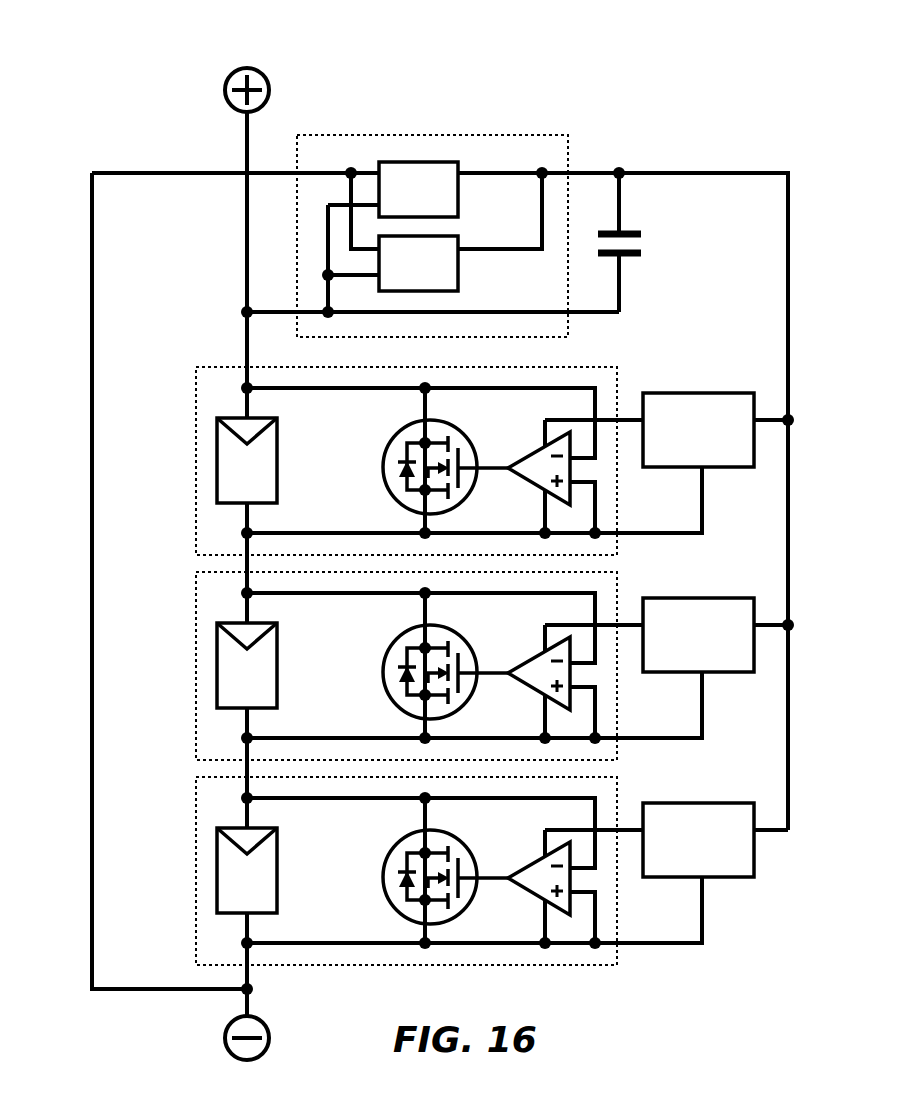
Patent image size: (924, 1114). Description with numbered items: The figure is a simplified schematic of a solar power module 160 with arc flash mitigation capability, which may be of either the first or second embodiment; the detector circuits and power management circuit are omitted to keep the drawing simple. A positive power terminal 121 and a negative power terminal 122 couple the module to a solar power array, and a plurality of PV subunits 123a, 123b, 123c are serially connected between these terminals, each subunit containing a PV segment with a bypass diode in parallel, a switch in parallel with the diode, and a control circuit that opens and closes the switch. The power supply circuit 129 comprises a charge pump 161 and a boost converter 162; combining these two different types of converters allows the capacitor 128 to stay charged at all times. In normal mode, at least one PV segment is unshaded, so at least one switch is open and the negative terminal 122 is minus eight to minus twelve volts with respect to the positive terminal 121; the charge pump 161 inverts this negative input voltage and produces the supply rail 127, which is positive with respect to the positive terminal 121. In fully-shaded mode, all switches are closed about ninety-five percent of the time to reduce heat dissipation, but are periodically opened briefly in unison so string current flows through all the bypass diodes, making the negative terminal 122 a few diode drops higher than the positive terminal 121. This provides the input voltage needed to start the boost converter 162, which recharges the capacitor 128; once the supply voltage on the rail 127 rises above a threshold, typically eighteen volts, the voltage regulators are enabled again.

The positive power terminal 121 is at (269, 88).
The negative power terminal 122 is at (230, 1048).
The PV subunit 123a is at (196, 463).
The PV subunit 123b is at (455, 651).
The PV subunit 123c is at (455, 856).
The supply rail 127 is at (644, 173).
The capacitor 128 is at (641, 253).
The power supply circuit 129 is at (396, 135).
The solar power module 160 is at (98, 100).
The charge pump 161 is at (460, 197).
The boost converter 162 is at (460, 272).